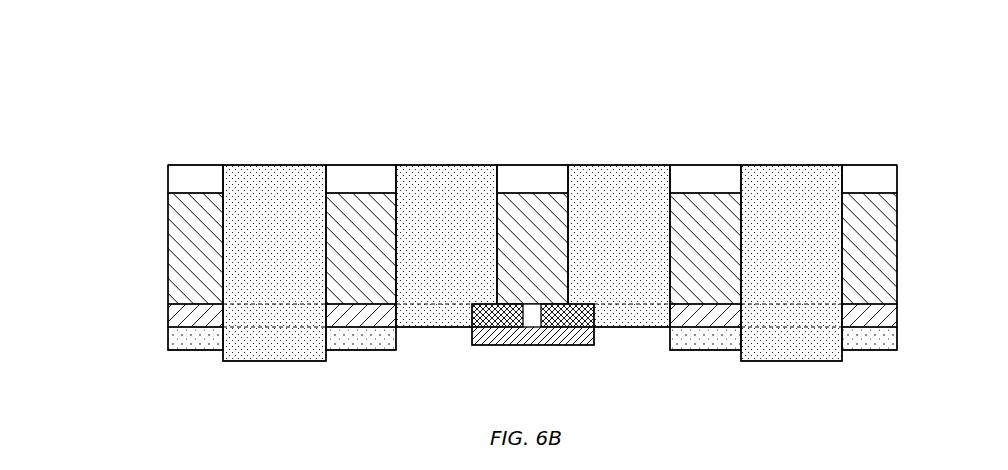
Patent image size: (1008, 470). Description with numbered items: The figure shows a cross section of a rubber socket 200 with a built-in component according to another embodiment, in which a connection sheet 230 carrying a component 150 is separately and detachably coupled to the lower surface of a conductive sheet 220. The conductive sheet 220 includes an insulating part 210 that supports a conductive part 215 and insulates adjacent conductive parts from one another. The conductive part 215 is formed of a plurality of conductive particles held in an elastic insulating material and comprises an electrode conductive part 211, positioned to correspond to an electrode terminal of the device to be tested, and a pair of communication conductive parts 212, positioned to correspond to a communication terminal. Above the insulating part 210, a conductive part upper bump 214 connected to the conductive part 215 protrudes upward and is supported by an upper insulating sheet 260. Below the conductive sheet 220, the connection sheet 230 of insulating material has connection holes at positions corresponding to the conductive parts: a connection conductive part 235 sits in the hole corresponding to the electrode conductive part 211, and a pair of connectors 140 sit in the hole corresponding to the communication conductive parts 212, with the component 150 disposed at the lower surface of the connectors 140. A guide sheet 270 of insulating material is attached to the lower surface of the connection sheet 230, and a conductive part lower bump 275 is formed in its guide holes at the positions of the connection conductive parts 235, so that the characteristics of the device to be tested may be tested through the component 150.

The rubber socket 200 is at (461, 228).
The conductive sheet 220 is at (461, 236).
The conductive part 215 is at (446, 205).
The electrode conductive part 211 is at (287, 255).
The communication conductive part 212 is at (608, 233).
The conductive part upper bump 214 is at (808, 178).
The upper insulating sheet 260 is at (165, 178).
The insulating part 210 is at (166, 228).
The connection sheet 230 is at (167, 318).
The guide sheet 270 is at (166, 338).
The connection conductive part 235 is at (775, 313).
The conductive part lower bump 275 is at (813, 348).
The connector 140 is at (526, 359).
The component 150 is at (568, 347).